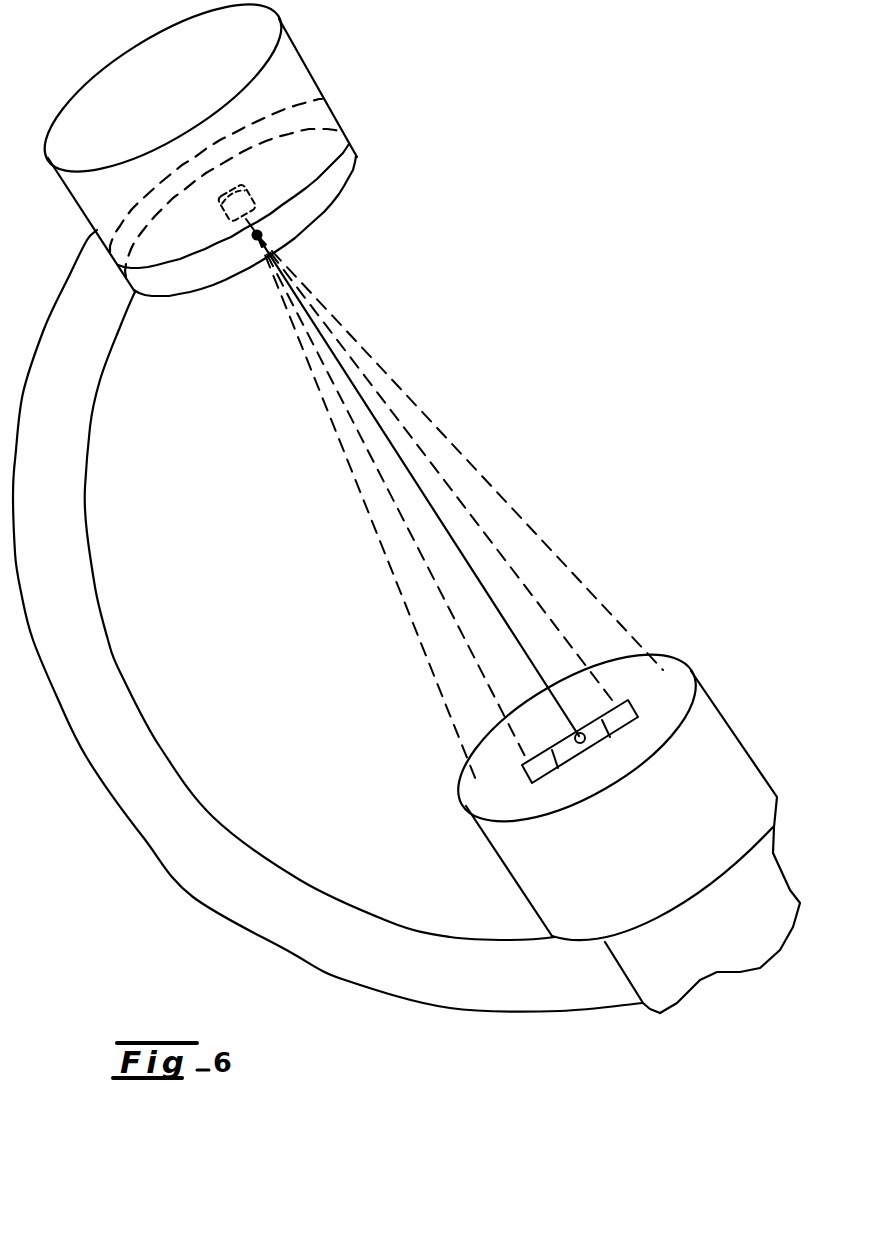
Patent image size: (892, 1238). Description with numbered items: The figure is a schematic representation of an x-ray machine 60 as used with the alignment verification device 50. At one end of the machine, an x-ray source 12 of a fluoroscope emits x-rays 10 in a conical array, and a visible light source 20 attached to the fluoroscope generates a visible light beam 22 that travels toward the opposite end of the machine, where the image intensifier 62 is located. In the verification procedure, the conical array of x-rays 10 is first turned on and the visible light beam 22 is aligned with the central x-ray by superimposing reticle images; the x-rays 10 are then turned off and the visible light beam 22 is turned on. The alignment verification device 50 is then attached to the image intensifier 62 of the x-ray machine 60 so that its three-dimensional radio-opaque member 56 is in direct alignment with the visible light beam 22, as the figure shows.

The x-rays 10 is at (395, 380).
The x-ray source 12 is at (305, 52).
The visible light source 20 is at (239, 188).
The visible light beam 22 is at (322, 337).
The alignment verification device 50 is at (547, 748).
The three-dimensional radio-opaque member 56 is at (578, 733).
The x-ray machine 60 is at (124, 677).
The image intensifier 62 is at (675, 661).